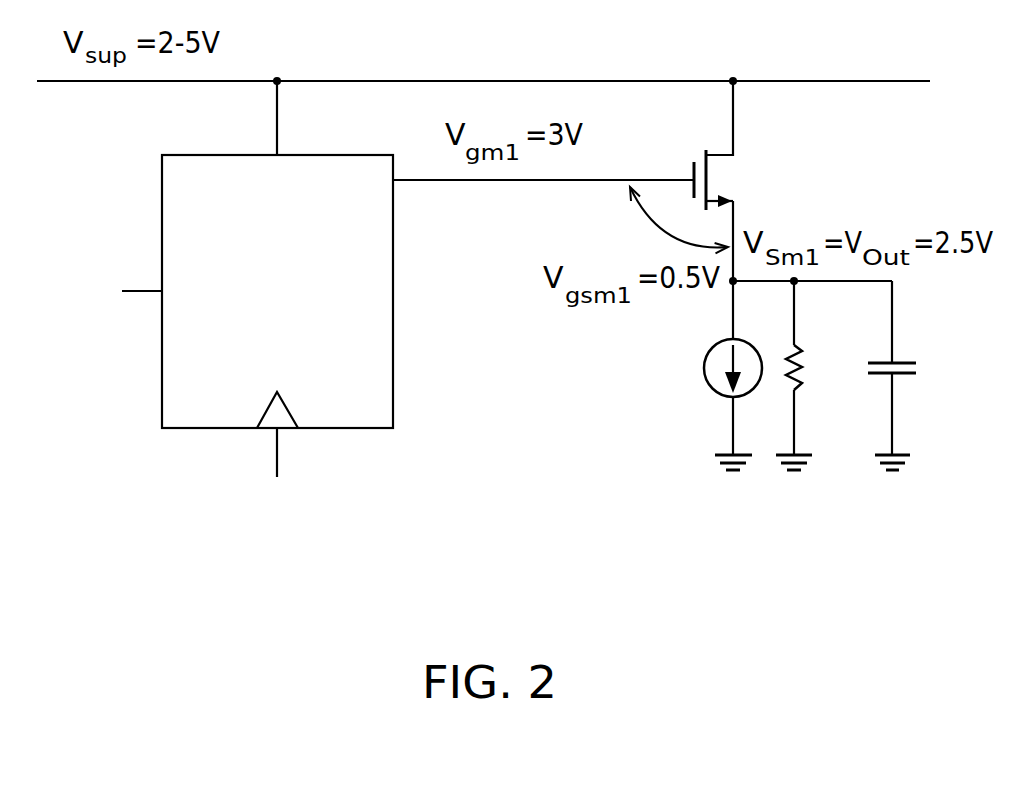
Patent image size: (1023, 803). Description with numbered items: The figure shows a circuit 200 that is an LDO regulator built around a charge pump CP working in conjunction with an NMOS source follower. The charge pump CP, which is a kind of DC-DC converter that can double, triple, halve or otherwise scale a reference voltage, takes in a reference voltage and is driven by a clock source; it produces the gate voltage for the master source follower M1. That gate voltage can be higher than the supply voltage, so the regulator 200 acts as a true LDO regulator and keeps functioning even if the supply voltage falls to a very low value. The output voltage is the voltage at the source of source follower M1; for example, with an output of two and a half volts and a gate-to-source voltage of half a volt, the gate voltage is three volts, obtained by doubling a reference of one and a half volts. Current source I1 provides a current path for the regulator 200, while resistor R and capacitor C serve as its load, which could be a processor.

The circuit 200 is at (738, 584).
The charge pump CP is at (225, 334).
The master source follower M1 is at (740, 181).
The current source I1 is at (698, 369).
The resistor R is at (803, 368).
The capacitor C is at (917, 369).